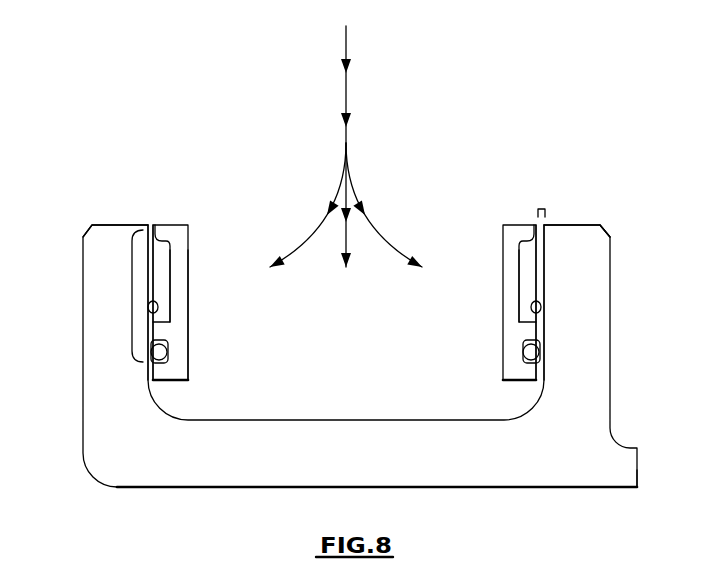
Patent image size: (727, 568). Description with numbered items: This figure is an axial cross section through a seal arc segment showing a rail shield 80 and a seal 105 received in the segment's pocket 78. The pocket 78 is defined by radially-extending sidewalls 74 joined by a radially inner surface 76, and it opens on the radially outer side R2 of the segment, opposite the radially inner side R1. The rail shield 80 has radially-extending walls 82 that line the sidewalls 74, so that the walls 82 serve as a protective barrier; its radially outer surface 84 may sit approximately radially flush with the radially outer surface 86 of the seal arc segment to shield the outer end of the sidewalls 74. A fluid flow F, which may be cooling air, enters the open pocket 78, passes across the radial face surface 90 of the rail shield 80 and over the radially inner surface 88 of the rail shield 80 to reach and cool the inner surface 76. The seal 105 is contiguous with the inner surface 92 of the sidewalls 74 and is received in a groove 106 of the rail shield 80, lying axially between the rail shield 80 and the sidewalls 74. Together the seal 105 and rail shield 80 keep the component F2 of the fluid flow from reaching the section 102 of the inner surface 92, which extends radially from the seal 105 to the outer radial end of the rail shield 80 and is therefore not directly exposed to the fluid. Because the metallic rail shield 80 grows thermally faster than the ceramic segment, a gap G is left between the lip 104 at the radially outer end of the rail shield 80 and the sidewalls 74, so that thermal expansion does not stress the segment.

The sidewalls 74 is at (103, 351).
The radially inner surface 76 is at (320, 421).
The pocket 78 is at (359, 384).
The rail shield 80 is at (184, 214).
The walls 82 is at (177, 312).
The radially outer surface 84 is at (166, 222).
The radially outer surface 86 is at (115, 224).
The radially inner surface 88 is at (175, 386).
The radial face surface 90 is at (189, 327).
The inner surface 92 is at (151, 313).
The section 102 is at (131, 300).
The lip 104 is at (531, 232).
The seal 105 is at (154, 358).
The groove 106 is at (528, 348).
The fluid flow F is at (346, 133).
The component of the fluid flow F2 is at (168, 389).
The gap G is at (544, 208).
The radially inner side R1 is at (625, 500).
The radially outer side R2 is at (624, 210).